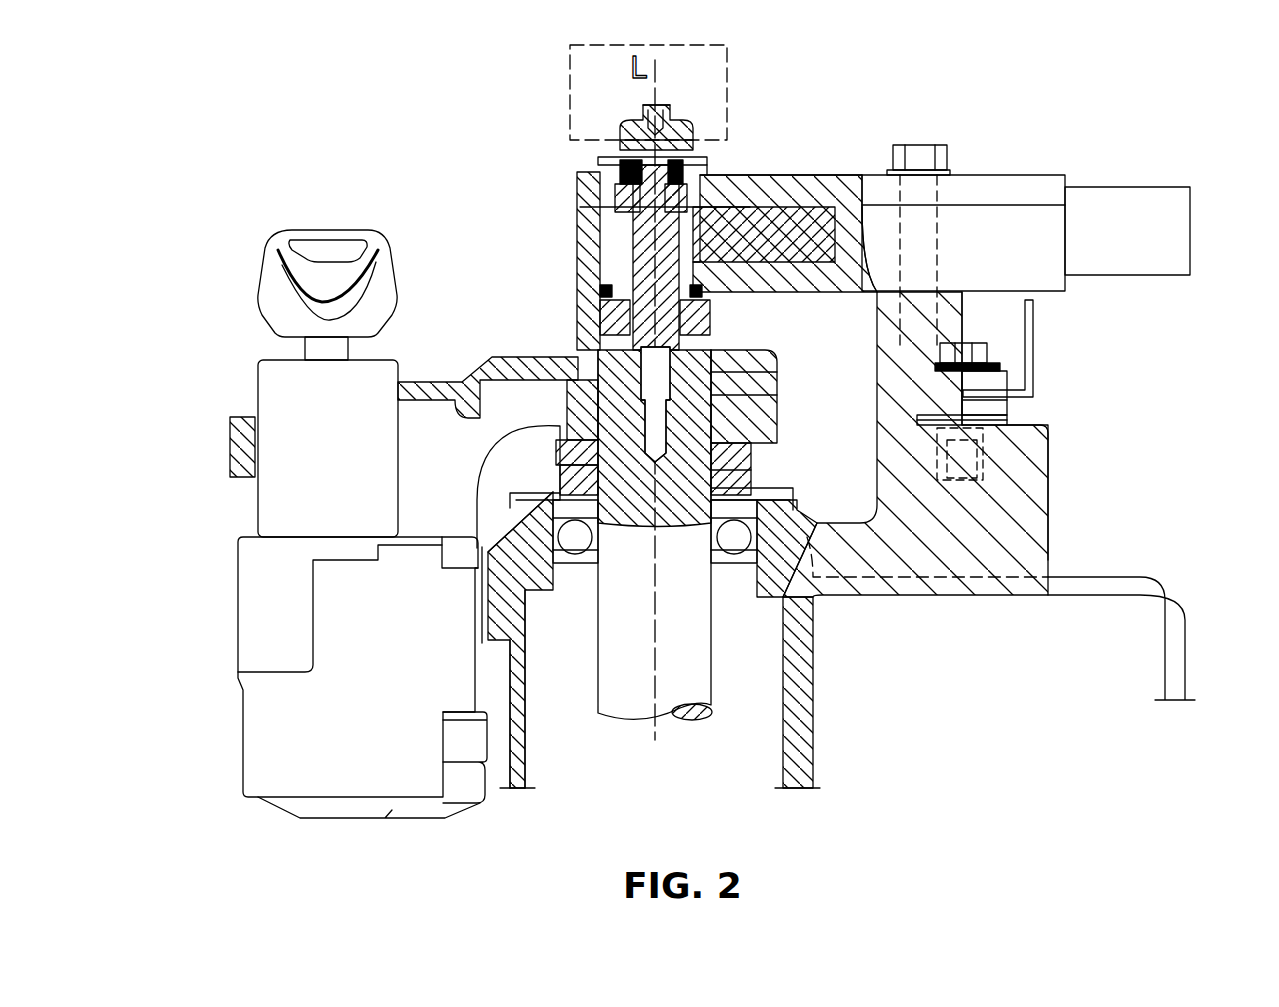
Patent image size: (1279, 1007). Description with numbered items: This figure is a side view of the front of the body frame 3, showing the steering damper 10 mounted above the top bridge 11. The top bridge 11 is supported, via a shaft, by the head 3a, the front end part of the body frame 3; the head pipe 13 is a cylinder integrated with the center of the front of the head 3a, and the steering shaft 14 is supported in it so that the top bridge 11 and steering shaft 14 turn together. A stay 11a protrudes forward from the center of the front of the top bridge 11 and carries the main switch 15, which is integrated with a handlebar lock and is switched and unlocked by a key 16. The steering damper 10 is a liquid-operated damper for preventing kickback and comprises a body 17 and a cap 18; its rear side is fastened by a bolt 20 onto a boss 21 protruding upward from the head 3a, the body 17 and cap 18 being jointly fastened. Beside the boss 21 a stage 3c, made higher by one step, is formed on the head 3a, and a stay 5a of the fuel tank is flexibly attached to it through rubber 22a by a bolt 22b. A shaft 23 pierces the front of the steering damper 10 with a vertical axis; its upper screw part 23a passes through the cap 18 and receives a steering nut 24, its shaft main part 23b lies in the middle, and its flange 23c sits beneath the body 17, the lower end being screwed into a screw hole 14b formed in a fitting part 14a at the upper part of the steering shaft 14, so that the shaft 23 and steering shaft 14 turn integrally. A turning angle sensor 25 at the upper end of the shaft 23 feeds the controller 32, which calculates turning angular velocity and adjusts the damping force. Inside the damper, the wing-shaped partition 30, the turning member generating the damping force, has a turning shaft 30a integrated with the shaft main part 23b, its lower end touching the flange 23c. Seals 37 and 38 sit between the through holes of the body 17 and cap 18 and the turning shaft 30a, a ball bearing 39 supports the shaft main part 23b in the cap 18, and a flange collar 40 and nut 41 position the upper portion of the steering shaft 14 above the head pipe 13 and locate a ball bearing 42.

The body frame 3 is at (1165, 570).
The head 3a is at (905, 570).
The stage 3c is at (1030, 450).
The stay 5a is at (1036, 325).
The steering damper 10 is at (996, 168).
The top bridge 11 is at (580, 357).
The stay 11a is at (452, 382).
The head pipe 13 is at (525, 776).
The steering shaft 14 is at (700, 677).
The fitting part 14a is at (727, 375).
The screw hole 14b is at (565, 400).
The main switch 15 is at (300, 740).
The key 16 is at (265, 257).
The body 17 is at (843, 280).
The cap 18 is at (835, 175).
The bolt 20 is at (925, 145).
The boss 21 is at (945, 312).
The rubber 22a is at (1000, 407).
The bolt 22b is at (987, 350).
The shaft 23 is at (600, 232).
The upper screw part 23a is at (675, 125).
The shaft main part 23b is at (600, 215).
The flange 23c is at (697, 383).
The steering nut 24 is at (625, 125).
The turning angle sensor 25 is at (700, 60).
The partition 30 is at (778, 195).
The turning shaft 30a is at (700, 258).
The controller 32 is at (1158, 257).
The seal 37 is at (578, 190).
The seal 38 is at (600, 296).
The ball bearing 39 is at (598, 160).
The flange collar 40 is at (616, 148).
The nut 41 is at (560, 440).
The ball bearing 42 is at (575, 563).